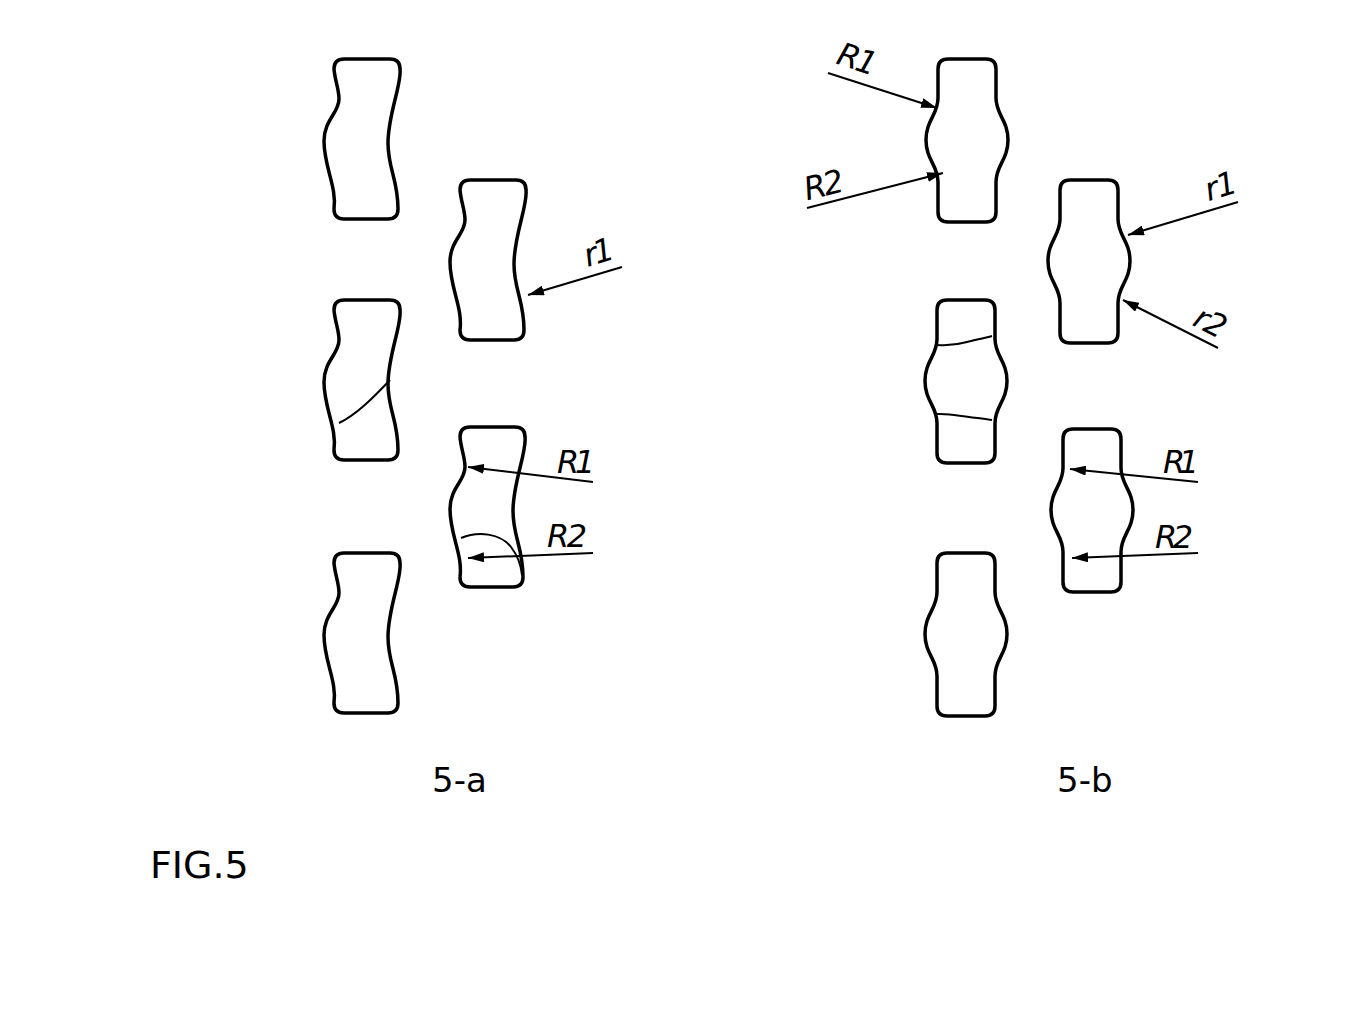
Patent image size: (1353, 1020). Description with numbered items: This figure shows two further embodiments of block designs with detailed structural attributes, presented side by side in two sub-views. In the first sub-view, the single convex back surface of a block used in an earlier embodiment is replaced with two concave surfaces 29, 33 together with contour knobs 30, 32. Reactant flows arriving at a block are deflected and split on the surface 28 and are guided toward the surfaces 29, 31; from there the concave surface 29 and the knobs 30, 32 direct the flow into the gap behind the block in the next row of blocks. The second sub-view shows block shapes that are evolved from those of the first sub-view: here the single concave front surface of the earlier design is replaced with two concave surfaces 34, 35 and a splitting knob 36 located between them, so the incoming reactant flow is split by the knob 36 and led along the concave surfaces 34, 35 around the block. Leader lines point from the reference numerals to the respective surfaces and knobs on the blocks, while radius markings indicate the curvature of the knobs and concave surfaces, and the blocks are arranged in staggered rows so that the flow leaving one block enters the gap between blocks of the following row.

The surface 28 is at (339, 423).
The concave surface 29 is at (462, 482).
The contour knob 30 is at (449, 503).
The surface 31 is at (461, 293).
The contour knob 32 is at (462, 427).
The concave surface 33 is at (520, 568).
The concave surface 34 is at (937, 345).
The concave surface 35 is at (937, 414).
The splitting knob 36 is at (1007, 380).